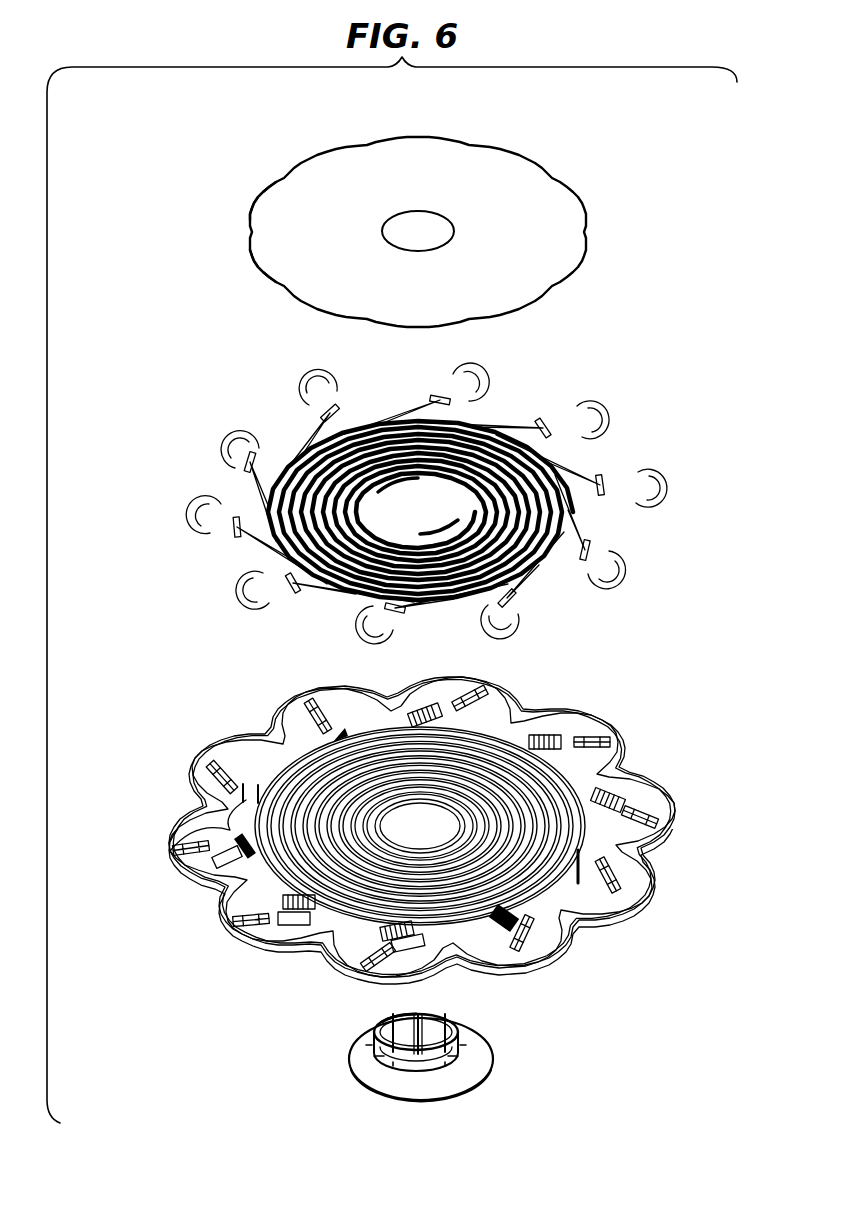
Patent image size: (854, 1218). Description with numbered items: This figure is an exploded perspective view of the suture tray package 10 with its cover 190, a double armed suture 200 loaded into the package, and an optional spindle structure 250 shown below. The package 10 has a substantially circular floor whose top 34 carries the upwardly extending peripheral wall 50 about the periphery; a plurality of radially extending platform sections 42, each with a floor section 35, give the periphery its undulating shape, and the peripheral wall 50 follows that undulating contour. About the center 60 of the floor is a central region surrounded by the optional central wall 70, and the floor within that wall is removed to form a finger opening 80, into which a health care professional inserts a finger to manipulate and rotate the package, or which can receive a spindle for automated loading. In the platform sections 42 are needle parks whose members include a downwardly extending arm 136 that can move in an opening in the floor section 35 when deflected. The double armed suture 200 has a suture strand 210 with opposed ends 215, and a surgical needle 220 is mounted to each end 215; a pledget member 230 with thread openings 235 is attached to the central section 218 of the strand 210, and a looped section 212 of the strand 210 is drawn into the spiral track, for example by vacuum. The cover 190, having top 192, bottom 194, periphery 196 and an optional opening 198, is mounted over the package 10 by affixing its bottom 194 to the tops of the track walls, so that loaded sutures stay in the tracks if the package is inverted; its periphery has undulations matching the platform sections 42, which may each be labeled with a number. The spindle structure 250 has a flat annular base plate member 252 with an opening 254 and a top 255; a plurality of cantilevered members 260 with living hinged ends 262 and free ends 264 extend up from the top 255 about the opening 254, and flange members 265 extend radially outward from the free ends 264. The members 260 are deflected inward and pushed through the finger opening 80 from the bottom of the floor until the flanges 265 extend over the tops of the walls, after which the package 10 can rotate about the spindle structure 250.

The suture tray package 10 is at (724, 786).
The top of floor 34 is at (210, 833).
The floor section 35 is at (217, 865).
The platform section 42 is at (630, 873).
The peripheral wall 50 is at (640, 773).
The center 60 is at (424, 830).
The central wall 70 is at (370, 827).
The finger opening 80 is at (403, 827).
The downwardly extending arm 136 is at (172, 840).
The cover 190 is at (538, 222).
The top of cover 192 is at (488, 167).
The bottom of cover 194 is at (262, 270).
The periphery of cover 196 is at (272, 188).
The opening of cover 198 is at (412, 232).
The double armed suture 200 is at (560, 405).
The suture strand 210 is at (608, 535).
The looped section 212 is at (416, 530).
The suture end 215 is at (190, 526).
The central section of suture 218 is at (263, 462).
The surgical needle 220 is at (650, 488).
The pledget member 230 is at (487, 605).
The thread opening 235 is at (563, 568).
The spindle structure 250 is at (537, 1066).
The base plate member 252 is at (415, 1090).
The opening of base plate 254 is at (425, 1048).
The top of base plate 255 is at (360, 1050).
The cantilevered member 260 is at (385, 1060).
The living hinged end 262 is at (400, 1075).
The free end 264 is at (435, 1025).
The flange member 265 is at (398, 1018).